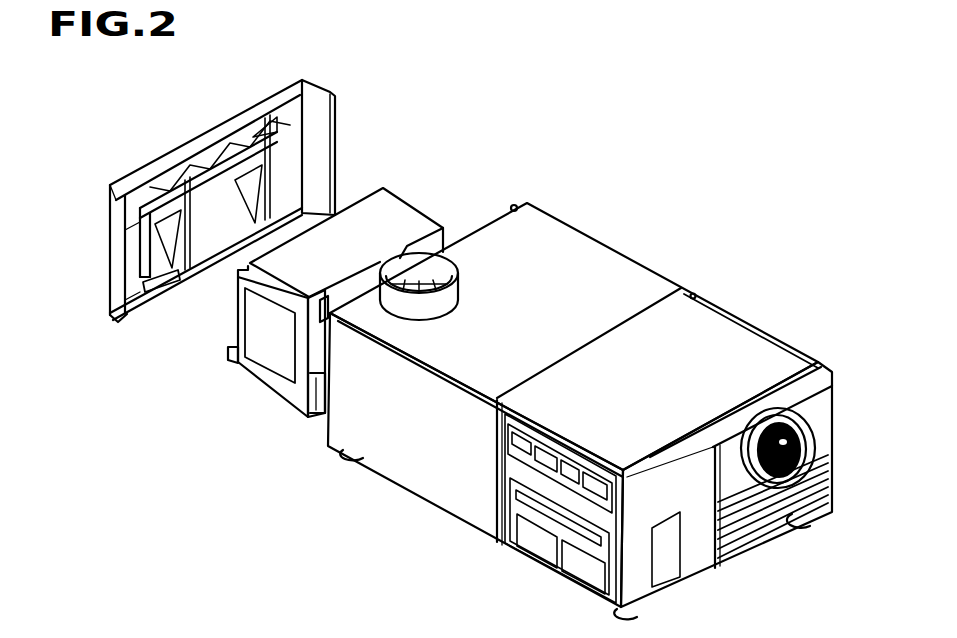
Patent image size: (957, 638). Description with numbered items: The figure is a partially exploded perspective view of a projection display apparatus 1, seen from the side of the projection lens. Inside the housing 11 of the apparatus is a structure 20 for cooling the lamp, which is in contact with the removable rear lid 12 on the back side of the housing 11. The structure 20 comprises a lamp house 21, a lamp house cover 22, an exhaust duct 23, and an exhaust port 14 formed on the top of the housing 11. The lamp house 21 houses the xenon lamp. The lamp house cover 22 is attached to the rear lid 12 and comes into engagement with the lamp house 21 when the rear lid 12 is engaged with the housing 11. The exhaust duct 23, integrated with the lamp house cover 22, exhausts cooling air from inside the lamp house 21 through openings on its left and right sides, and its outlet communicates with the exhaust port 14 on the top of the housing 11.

The projection display apparatus 1 is at (311, 506).
The housing 11 is at (633, 273).
The rear lid 12 is at (222, 211).
The exhaust port 14 is at (445, 246).
The structure for cooling a lamp 20 is at (400, 152).
The lamp house 21 is at (401, 210).
The lamp house cover 22 is at (208, 230).
The exhaust duct 23 is at (175, 298).